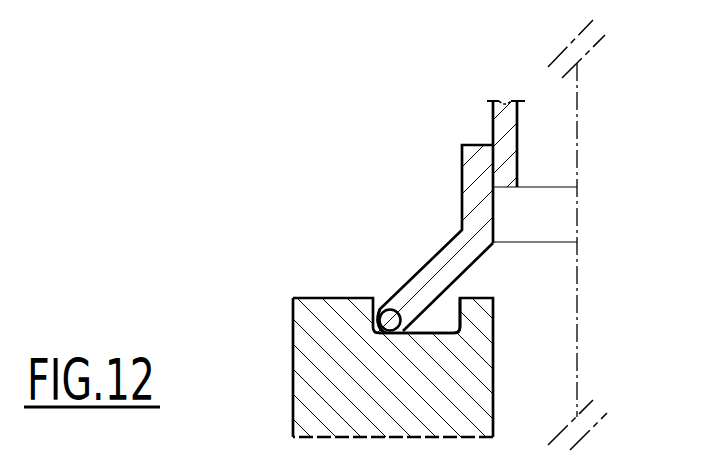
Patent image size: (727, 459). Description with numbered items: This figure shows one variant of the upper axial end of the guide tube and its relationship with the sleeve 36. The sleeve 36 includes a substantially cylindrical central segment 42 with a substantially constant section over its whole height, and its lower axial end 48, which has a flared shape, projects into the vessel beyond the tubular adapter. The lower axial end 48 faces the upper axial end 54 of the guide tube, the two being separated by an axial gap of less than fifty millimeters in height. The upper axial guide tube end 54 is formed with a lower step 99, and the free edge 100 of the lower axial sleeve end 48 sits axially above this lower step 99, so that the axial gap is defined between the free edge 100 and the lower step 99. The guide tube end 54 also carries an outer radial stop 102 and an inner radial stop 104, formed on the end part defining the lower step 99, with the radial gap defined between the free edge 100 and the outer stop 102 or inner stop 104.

The sleeve 36 is at (459, 118).
The substantially cylindrical central segment 42 is at (513, 127).
The lower axial end of the sleeve 48 is at (440, 273).
The upper axial end of the guide tube 54 is at (317, 383).
The lower step 99 is at (425, 332).
The free edge 100 is at (384, 311).
The outer radial stop 102 is at (378, 303).
The inner radial stop 104 is at (456, 305).